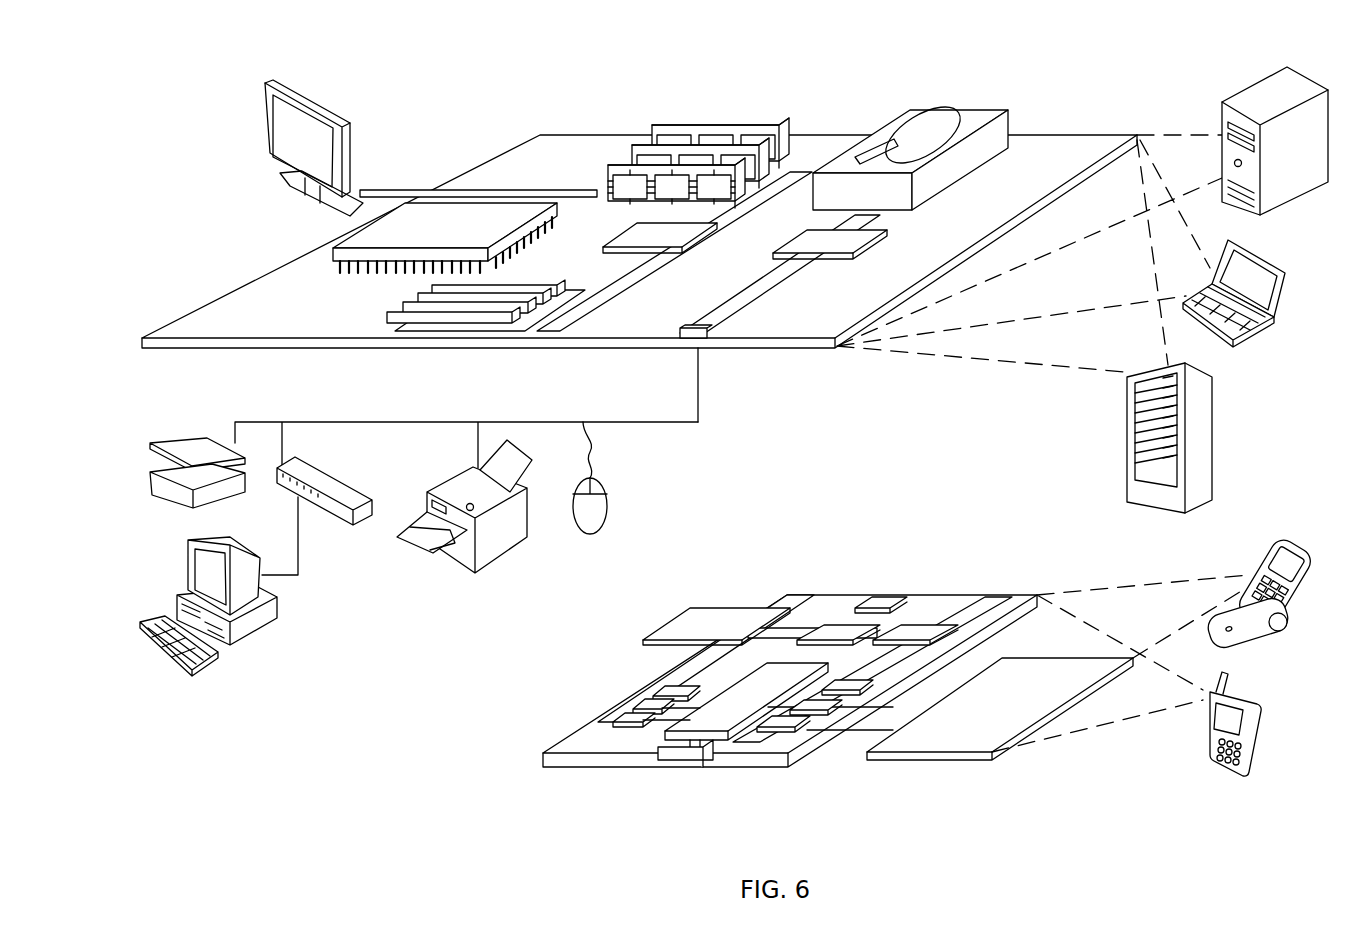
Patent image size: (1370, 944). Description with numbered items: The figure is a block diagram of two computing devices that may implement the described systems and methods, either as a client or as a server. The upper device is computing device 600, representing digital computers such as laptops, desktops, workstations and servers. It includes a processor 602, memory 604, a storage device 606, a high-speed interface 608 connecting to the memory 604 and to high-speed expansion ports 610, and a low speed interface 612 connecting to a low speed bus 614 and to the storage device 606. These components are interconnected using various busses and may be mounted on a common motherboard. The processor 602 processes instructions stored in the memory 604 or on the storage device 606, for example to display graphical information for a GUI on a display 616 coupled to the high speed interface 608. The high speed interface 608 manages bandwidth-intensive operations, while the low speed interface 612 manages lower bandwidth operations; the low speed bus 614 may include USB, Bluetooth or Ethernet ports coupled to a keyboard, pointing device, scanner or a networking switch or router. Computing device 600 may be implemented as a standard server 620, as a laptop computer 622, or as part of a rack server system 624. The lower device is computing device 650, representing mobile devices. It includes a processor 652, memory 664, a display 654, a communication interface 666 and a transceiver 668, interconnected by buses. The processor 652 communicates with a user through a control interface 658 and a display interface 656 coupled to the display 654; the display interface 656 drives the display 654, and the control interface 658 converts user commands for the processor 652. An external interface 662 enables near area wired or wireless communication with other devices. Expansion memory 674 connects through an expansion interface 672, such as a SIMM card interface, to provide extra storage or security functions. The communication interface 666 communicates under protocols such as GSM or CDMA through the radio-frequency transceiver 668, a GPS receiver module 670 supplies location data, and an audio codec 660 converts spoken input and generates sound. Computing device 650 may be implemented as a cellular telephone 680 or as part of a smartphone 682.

The computing device 600 is at (457, 103).
The processor 602 is at (333, 250).
The memory 604 is at (665, 125).
The storage device 606 is at (904, 112).
The high-speed interface 608 is at (634, 232).
The high-speed expansion ports 610 is at (398, 309).
The low speed interface 612 is at (800, 238).
The low speed bus 614 is at (700, 336).
The display 616 is at (268, 86).
The standard server 620 is at (1221, 117).
The laptop computer 622 is at (1283, 270).
The rack server system 624 is at (1125, 465).
The computing device 650 is at (514, 771).
The processor 652 is at (720, 723).
The display 654 is at (958, 744).
The display interface 656 is at (793, 731).
The control interface 658 is at (827, 717).
The audio codec 660 is at (850, 693).
The external interface 662 is at (685, 764).
The memory 664 is at (634, 712).
The communication interface 666 is at (840, 631).
The transceiver 668 is at (917, 629).
The GPS receiver module 670 is at (892, 598).
The expansion interface 672 is at (770, 604).
The expansion memory 674 is at (692, 608).
The cellular telephone 680 is at (1267, 547).
The smartphone 682 is at (1210, 728).